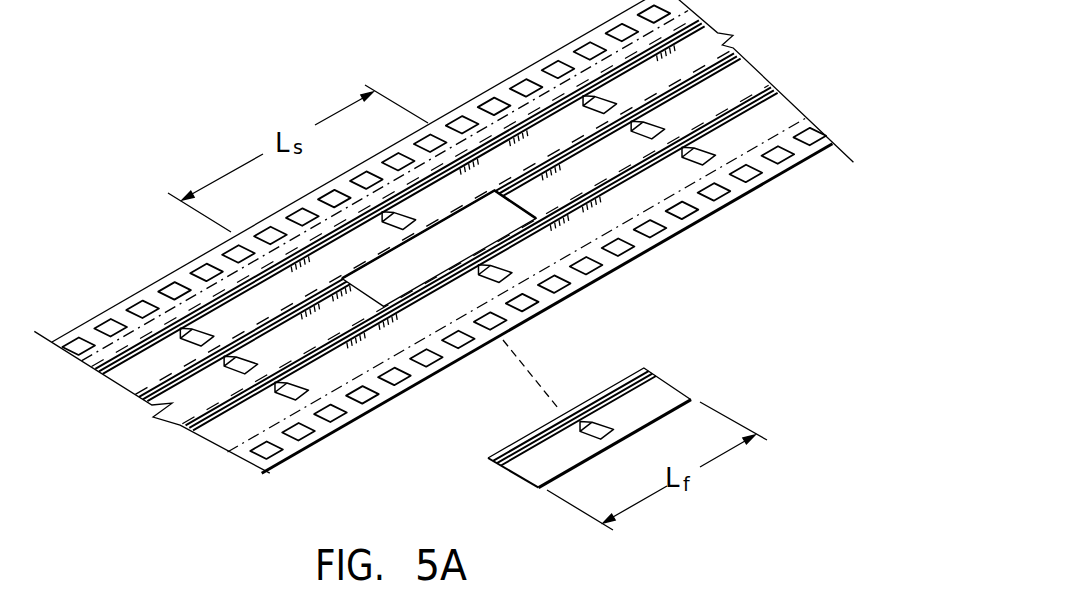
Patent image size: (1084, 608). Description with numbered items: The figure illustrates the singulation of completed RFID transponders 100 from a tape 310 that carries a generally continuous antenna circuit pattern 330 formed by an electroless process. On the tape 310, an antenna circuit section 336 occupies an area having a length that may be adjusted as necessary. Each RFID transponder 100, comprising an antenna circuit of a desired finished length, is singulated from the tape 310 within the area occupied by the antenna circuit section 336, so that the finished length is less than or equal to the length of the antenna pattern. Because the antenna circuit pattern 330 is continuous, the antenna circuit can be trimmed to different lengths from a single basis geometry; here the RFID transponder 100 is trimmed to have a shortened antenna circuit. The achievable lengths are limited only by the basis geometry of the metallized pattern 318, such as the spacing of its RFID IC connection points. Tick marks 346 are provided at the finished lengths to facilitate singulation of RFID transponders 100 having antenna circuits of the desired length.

The RFID transponder 100 is at (638, 450).
The tape 310 is at (183, 418).
The metallized pattern 318 is at (533, 74).
The continuous antenna circuit pattern 330 is at (640, 177).
The antenna circuit section 336 is at (317, 277).
The tick marks 346 is at (368, 342).